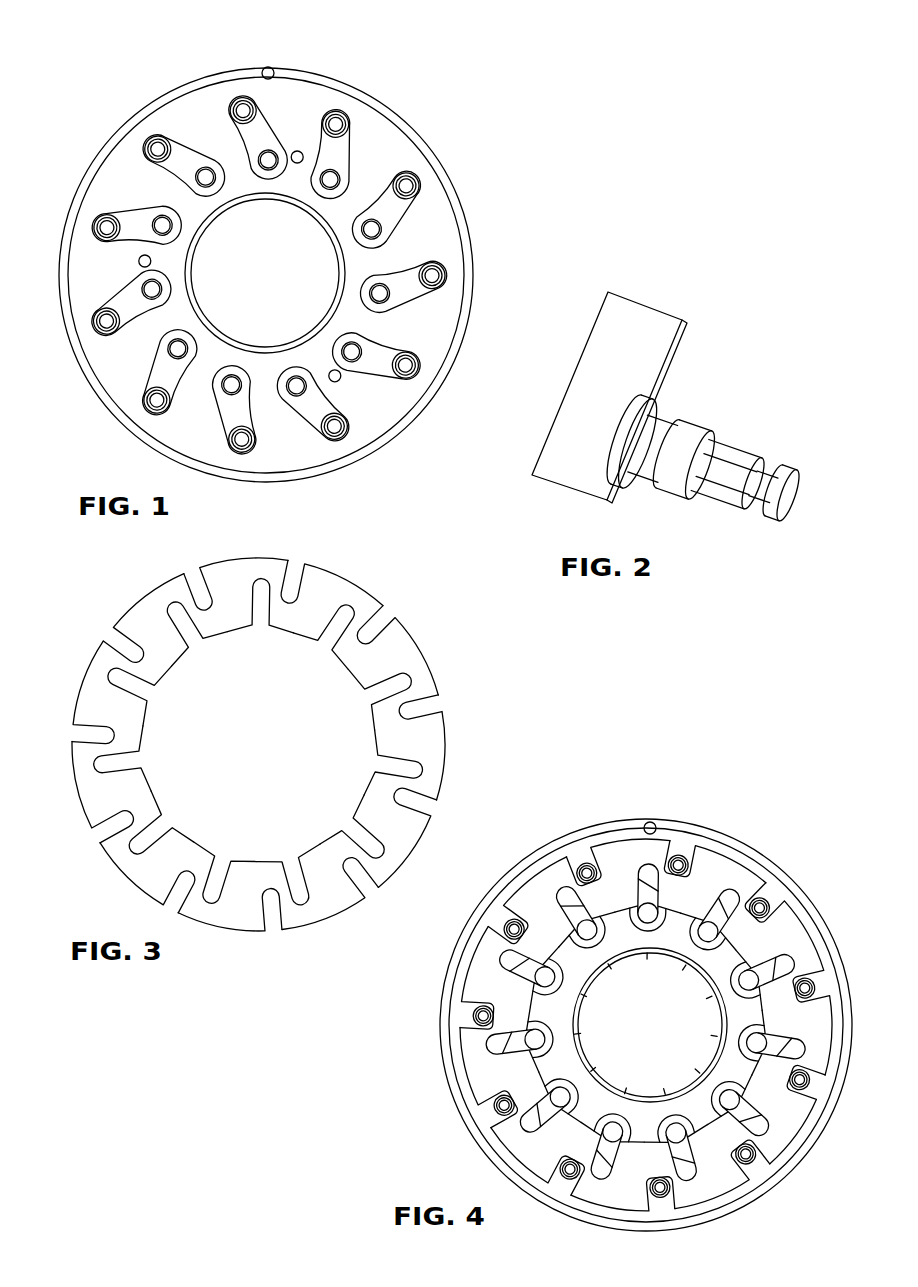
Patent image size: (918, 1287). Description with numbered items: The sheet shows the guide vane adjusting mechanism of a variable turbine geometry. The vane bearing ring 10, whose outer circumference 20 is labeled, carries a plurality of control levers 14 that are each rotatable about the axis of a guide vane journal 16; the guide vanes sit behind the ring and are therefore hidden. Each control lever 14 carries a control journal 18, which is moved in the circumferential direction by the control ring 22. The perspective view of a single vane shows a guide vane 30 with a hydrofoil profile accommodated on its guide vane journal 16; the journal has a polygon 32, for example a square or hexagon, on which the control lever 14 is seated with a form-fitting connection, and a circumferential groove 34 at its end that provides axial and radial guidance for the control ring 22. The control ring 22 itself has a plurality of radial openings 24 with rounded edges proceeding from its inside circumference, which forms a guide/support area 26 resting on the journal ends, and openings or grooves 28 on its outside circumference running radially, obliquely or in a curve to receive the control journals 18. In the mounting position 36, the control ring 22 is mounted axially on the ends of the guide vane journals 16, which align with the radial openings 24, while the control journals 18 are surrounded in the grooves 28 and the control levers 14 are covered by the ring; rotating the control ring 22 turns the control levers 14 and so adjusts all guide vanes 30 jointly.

In FIG. 1, the vane bearing ring 10 is at (375, 148).
In FIG. 4, the vane bearing ring 10 is at (465, 1023).
In FIG. 1, the control lever 14 is at (125, 292).
In FIG. 4, the control lever 14 is at (648, 915).
In FIG. 1, the guide vane journal 16 is at (205, 180).
In FIG. 2, the guide vane journal 16 is at (680, 443).
In FIG. 4, the guide vane journal 16 is at (752, 982).
In FIG. 1, the control journal 18 is at (157, 135).
In FIG. 4, the control journal 18 is at (803, 1085).
In FIG. 1, the circumference of the vane bearing ring 20 is at (395, 433).
In FIG. 4, the circumference of the vane bearing ring 20 is at (750, 843).
In FIG. 3, the control ring 22 is at (283, 743).
In FIG. 4, the control ring 22 is at (607, 1005).
In FIG. 3, the radial opening 24 is at (259, 745).
In FIG. 4, the radial opening 24 is at (650, 868).
In FIG. 3, the guide/support area 26 is at (227, 630).
In FIG. 3, the opening/groove 28 is at (414, 796).
In FIG. 4, the opening/groove 28 is at (768, 893).
In FIG. 2, the guide vane 30 is at (633, 322).
In FIG. 2, the polygon 32 is at (742, 456).
In FIG. 2, the circumferential groove 34 is at (757, 518).
In FIG. 4, the mounting position 36 is at (651, 810).